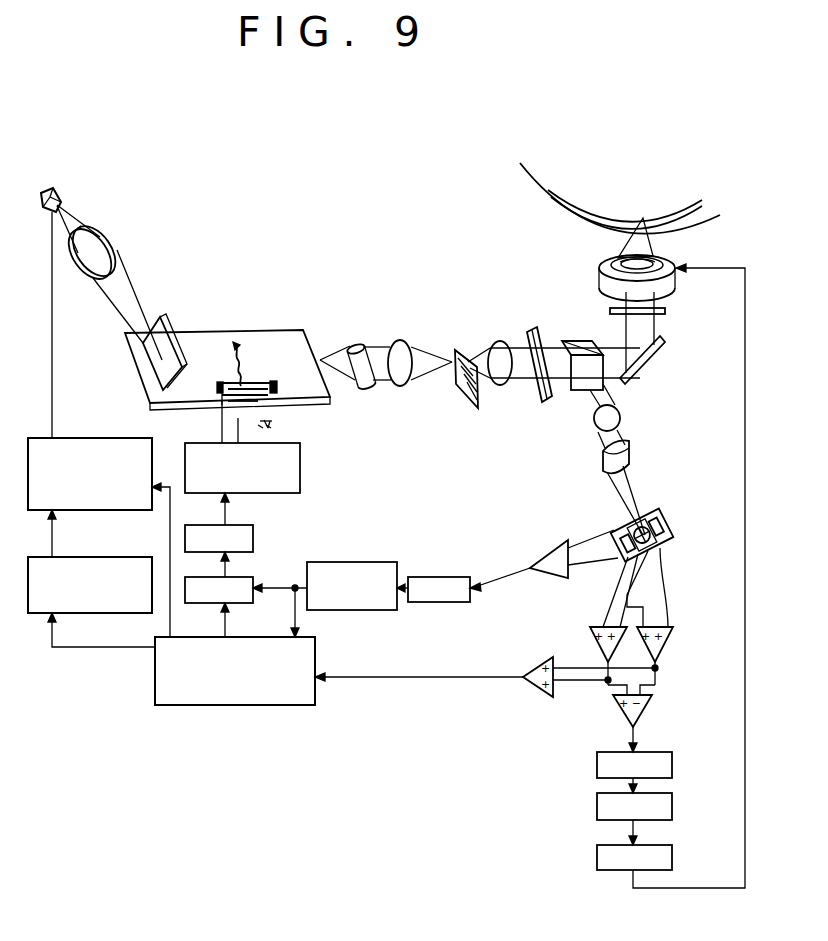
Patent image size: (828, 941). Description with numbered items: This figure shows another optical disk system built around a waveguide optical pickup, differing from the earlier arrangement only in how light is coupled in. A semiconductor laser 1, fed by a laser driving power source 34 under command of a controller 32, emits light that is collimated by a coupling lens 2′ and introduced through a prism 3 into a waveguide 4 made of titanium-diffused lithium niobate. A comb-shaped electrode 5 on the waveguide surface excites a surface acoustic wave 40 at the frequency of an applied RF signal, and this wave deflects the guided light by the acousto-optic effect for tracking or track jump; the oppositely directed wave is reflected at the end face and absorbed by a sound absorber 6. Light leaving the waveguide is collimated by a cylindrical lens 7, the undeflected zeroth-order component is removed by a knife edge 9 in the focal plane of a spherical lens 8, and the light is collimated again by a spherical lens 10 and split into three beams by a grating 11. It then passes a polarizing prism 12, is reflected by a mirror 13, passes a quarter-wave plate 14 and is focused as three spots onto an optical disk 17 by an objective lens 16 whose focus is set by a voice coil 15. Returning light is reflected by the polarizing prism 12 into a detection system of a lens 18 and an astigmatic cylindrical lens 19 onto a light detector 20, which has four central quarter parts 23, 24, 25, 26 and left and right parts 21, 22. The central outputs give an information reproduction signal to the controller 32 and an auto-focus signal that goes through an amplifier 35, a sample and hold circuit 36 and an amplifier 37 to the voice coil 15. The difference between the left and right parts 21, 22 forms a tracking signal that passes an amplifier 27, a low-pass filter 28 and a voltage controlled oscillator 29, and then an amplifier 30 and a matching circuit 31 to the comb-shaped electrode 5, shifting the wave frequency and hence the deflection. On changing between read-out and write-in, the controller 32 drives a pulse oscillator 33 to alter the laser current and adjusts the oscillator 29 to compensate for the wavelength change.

The semiconductor laser 1 is at (53, 190).
The coupling lens 2′ is at (100, 237).
The prism 3 is at (166, 320).
The waveguide 4 is at (195, 395).
The comb-shaped electrode 5 is at (276, 390).
The sound absorber 6 is at (240, 401).
The cylindrical lens 7 is at (366, 387).
The spherical lens 8 is at (402, 386).
The knife edge 9 is at (462, 405).
The spherical lens 10 is at (500, 343).
The grating 11 is at (533, 330).
The polarizing prism 12 is at (582, 342).
The mirror 13 is at (655, 350).
The quarter-wave plate 14 is at (665, 312).
The voice coil 15 is at (675, 278).
The objective lens 16 is at (611, 268).
The optical disk 17 is at (703, 208).
The lens 18 is at (621, 418).
The cylindrical lens 19 is at (625, 453).
The light detector 20 is at (668, 520).
The left part of light detector 21 is at (607, 521).
The right part of light detector 22 is at (672, 532).
The quarter part of light detector 23 is at (632, 526).
The quarter part of light detector 24 is at (648, 525).
The quarter part of light detector 25 is at (662, 551).
The quarter part of light detector 26 is at (622, 565).
The amplifier 27 is at (452, 577).
The low-pass filter 28 is at (370, 562).
The voltage controlled oscillator 29 is at (241, 603).
The amplifier 30 is at (253, 536).
The matching circuit 31 is at (300, 470).
The controller 32 is at (240, 705).
The pulse oscillator 33 is at (106, 557).
The laser driving power source 34 is at (86, 422).
The amplifier 35 is at (672, 763).
The sample and hold circuit 36 is at (672, 805).
The amplifier 37 is at (672, 855).
The surface acoustic wave 40 is at (243, 372).